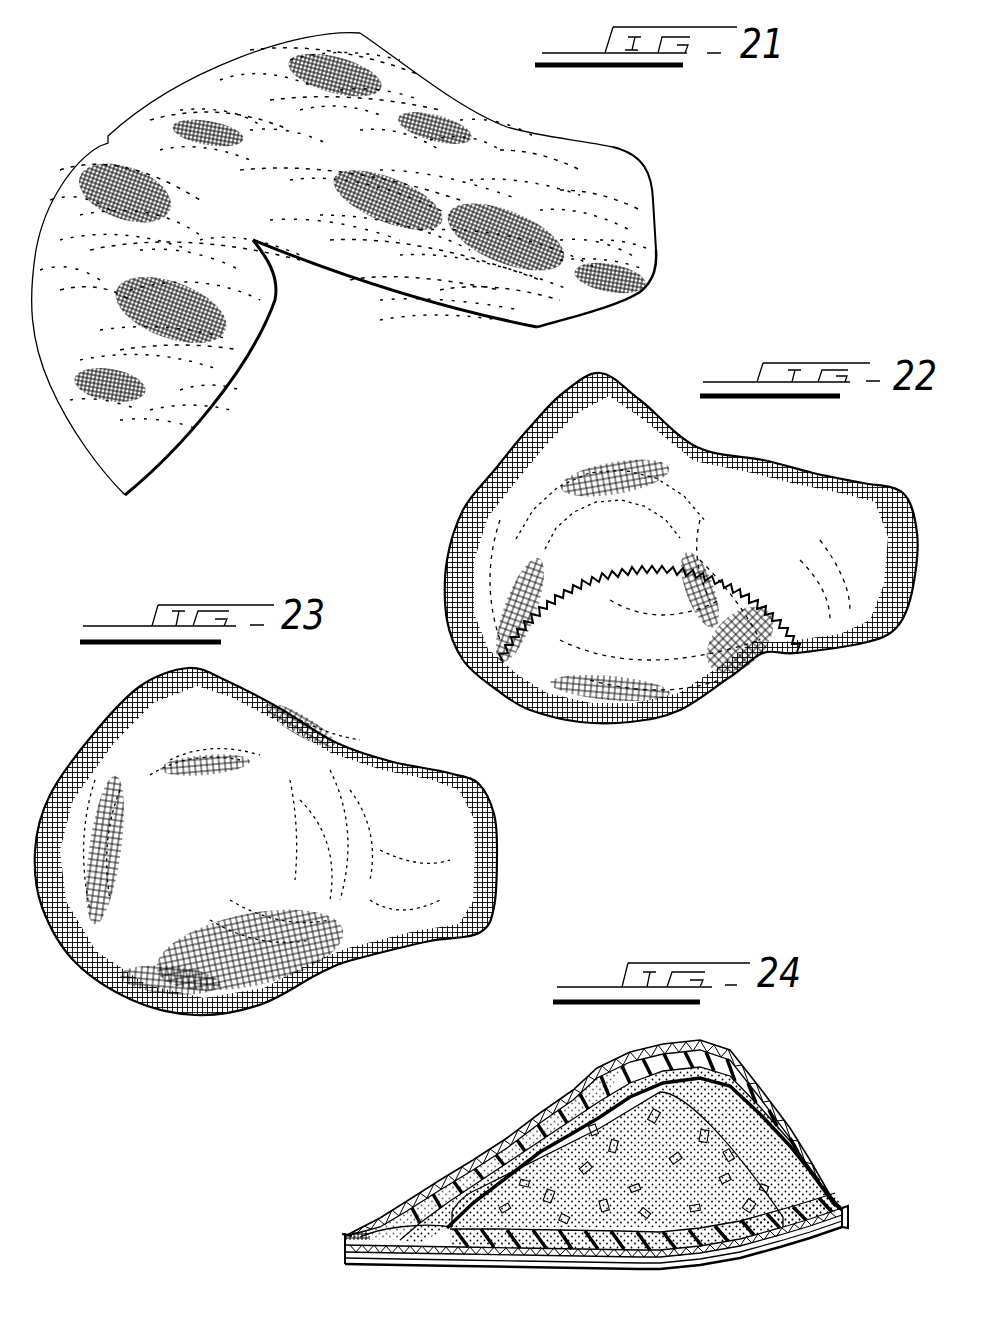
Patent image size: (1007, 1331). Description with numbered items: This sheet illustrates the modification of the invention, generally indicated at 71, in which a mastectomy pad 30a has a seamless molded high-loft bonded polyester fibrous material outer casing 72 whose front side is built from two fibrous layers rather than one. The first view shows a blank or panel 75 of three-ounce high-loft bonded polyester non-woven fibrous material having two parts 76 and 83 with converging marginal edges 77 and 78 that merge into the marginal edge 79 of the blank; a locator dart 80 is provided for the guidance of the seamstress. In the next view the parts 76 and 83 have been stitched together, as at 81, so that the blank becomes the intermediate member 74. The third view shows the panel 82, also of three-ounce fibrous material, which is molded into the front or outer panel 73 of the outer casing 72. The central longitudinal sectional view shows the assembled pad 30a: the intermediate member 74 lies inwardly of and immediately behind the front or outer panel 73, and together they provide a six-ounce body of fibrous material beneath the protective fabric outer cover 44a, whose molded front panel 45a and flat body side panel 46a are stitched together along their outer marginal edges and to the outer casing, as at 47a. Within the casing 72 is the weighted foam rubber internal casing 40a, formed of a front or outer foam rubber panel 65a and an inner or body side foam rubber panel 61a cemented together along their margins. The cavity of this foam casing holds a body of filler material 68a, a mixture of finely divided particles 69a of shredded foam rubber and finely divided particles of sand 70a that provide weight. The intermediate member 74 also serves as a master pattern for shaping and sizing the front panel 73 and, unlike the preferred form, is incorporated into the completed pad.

In FIG. 21, the locator dart 80 is at (107, 140).
In FIG. 21, the blank or panel 75 is at (507, 137).
In FIG. 21, the part of the blank 83 is at (633, 195).
In FIG. 21, the marginal edge 79 is at (657, 279).
In FIG. 21, the converging marginal edge 78 is at (480, 320).
In FIG. 21, the converging marginal edge 77 is at (260, 343).
In FIG. 21, the part of the blank 76 is at (183, 410).
In FIG. 22, the intermediate member 74 is at (759, 454).
In FIG. 24, the intermediate member 74 is at (547, 1114).
In FIG. 22, the stitching 81 is at (723, 593).
In FIG. 23, the front or outer panel 73 is at (412, 763).
In FIG. 24, the front or outer panel 73 is at (580, 1091).
In FIG. 23, the panel 82 is at (244, 985).
In FIG. 24, the panel 82 is at (493, 1134).
In FIG. 24, the molded outer or front panel 45a is at (673, 1047).
In FIG. 24, the protective fabric outer cover 44a is at (721, 1054).
In FIG. 24, the seamless molded fibrous material outer casing 72 is at (738, 1073).
In FIG. 24, the modification of the invention 71 is at (747, 1079).
In FIG. 24, the front or outer foam rubber panel 65a is at (770, 1110).
In FIG. 24, the weighted foam rubber internal casing 40a is at (787, 1140).
In FIG. 24, the mastectomy pad 30a is at (623, 1082).
In FIG. 24, the filler material 68a is at (507, 1260).
In FIG. 24, the inner or body side foam rubber panel 61a is at (570, 1262).
In FIG. 24, the inner flat or body side panel 46a is at (647, 1267).
In FIG. 24, the particles of shredded foam rubber 69a is at (807, 1170).
In FIG. 24, the sand 70a is at (730, 1263).
In FIG. 24, the stitching 47a is at (358, 1267).